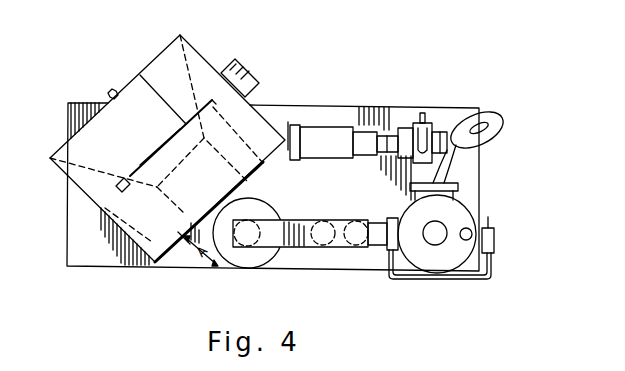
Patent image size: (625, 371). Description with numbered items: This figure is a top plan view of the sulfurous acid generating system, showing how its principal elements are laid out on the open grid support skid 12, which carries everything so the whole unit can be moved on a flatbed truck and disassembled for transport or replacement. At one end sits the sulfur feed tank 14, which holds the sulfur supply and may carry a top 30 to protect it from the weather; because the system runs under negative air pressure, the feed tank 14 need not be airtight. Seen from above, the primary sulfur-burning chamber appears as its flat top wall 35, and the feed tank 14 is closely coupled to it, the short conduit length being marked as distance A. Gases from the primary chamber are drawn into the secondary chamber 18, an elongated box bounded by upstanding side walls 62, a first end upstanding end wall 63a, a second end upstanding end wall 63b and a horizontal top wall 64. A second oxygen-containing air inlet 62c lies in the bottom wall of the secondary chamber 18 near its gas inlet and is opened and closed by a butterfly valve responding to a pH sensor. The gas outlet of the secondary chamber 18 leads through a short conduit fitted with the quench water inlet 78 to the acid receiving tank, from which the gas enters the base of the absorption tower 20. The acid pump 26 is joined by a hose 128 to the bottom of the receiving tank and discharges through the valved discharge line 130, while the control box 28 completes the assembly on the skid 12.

The open grid support skid 12 is at (77, 267).
The sulfur feed tank 14 is at (159, 50).
The secondary chamber 18 is at (301, 248).
The absorption tower 20 is at (473, 208).
The acid pump 26 is at (340, 126).
The control box 28 is at (237, 58).
The top 30 is at (130, 90).
The flat top wall 35 is at (245, 266).
The upstanding side walls 62 is at (333, 250).
The second oxygen-containing air inlet 62c is at (313, 220).
The first end upstanding end wall 63a is at (228, 194).
The second end upstanding end wall 63b is at (372, 220).
The horizontal top wall 64 is at (326, 222).
The quench water inlet 78 is at (403, 253).
The hose 128 is at (500, 126).
The valved discharge line 130 is at (423, 113).